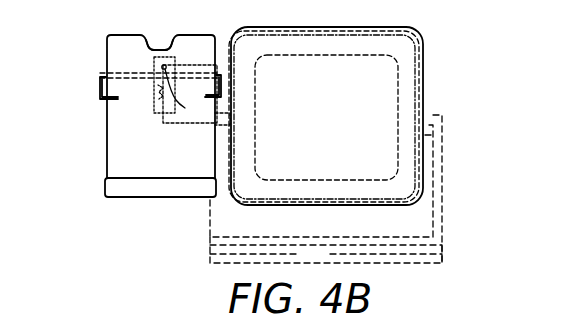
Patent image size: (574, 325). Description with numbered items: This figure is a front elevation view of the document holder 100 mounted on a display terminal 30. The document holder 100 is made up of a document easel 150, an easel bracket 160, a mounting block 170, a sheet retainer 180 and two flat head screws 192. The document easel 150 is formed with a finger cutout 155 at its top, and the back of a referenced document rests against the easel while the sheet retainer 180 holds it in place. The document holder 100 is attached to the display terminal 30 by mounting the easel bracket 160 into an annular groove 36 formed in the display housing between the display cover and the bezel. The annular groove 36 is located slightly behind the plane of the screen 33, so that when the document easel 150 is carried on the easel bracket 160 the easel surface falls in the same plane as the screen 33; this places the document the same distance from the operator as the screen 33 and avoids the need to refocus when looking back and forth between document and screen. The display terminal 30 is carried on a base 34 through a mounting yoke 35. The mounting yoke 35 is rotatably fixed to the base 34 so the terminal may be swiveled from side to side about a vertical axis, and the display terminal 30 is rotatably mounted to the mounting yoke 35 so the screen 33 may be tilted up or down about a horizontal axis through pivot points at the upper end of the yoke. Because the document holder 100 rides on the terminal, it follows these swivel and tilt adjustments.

The document holder 100 is at (110, 34).
The document easel 150 is at (119, 53).
The finger cutout 155 is at (164, 44).
The mounting block 170 is at (168, 65).
The sheet retainer 180 is at (99, 87).
The flat head screws 192 is at (193, 95).
The easel bracket 160 is at (402, 25).
The display terminal 30 is at (232, 205).
The screen 33 is at (330, 105).
The annular groove 36 is at (318, 206).
The mounting yoke 35 is at (445, 161).
The base 34 is at (442, 246).